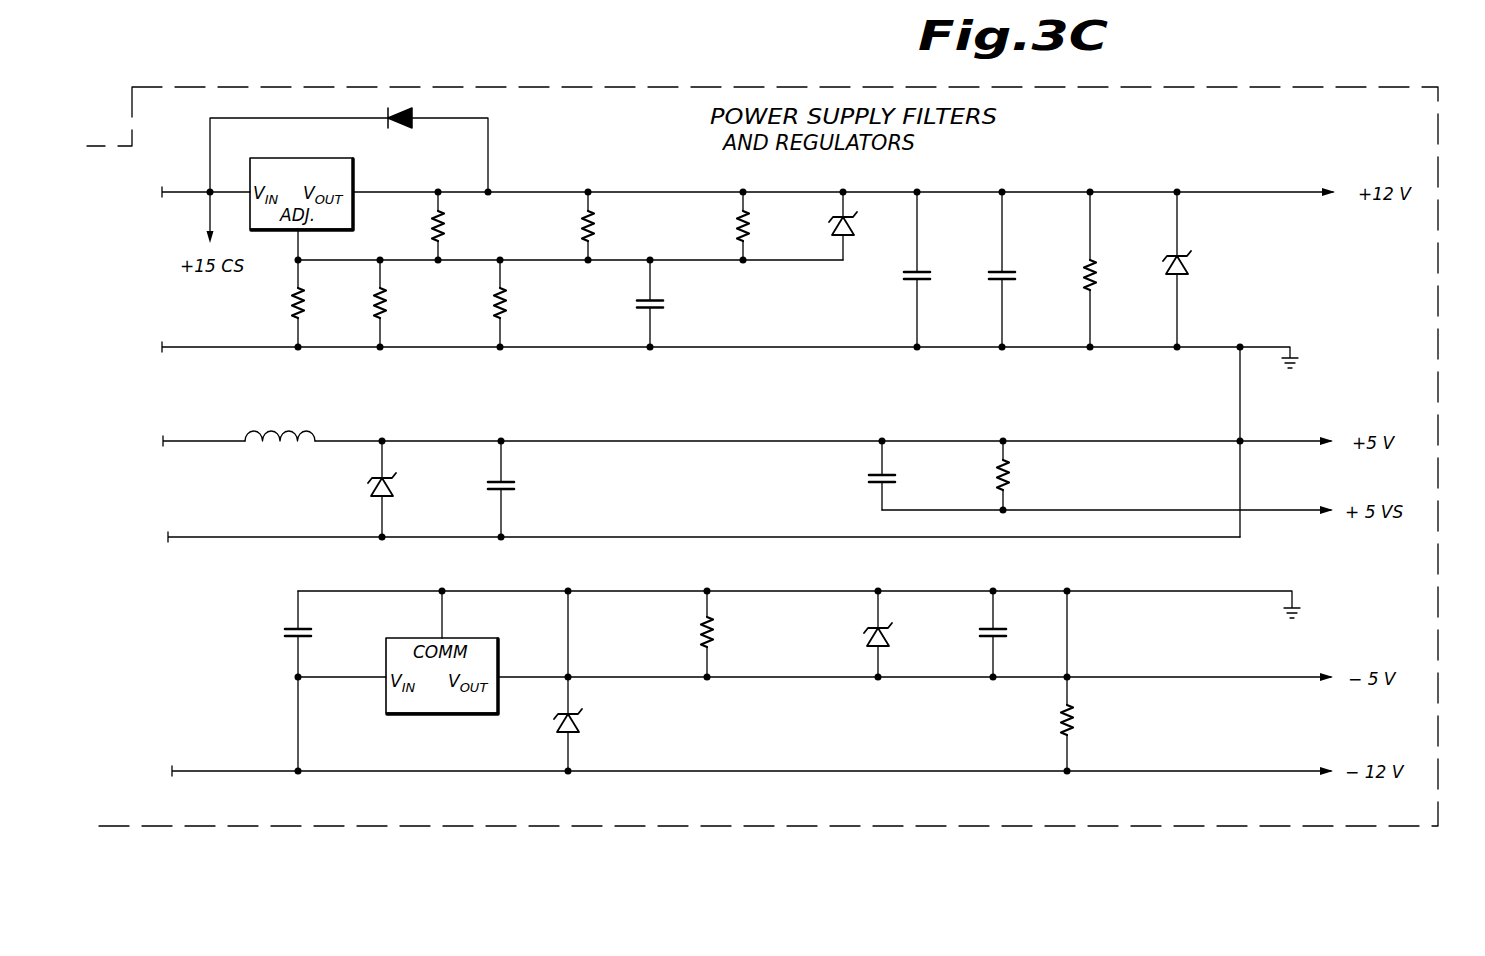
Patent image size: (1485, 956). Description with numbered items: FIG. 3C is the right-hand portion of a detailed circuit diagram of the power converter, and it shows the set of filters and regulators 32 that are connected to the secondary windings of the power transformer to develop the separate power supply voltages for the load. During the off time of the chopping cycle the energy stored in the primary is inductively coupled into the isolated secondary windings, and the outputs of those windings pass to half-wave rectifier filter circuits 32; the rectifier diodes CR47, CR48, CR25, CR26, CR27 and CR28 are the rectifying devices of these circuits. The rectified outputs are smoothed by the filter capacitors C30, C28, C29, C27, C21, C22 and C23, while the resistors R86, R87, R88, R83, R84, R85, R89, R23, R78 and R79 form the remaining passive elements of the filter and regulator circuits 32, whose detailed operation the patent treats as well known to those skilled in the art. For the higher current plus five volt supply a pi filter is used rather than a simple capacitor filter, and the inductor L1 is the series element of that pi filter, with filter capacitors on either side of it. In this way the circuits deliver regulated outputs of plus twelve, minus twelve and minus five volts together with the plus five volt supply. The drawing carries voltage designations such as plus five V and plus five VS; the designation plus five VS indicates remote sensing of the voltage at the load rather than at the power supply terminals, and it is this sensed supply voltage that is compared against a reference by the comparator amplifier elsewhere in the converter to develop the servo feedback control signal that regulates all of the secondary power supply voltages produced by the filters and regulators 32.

The filters and regulators 32 is at (728, 86).
The diode CR47 is at (430, 111).
The resistor R86 is at (460, 227).
The resistor R87 is at (610, 226).
The resistor R88 is at (766, 226).
The zener diode CR48 is at (861, 226).
The resistor R83 is at (265, 303).
The resistor R84 is at (407, 303).
The resistor R85 is at (528, 303).
The capacitor C30 is at (676, 303).
The capacitor C28 is at (936, 269).
The capacitor C29 is at (1021, 269).
The resistor R89 is at (1114, 269).
The zener diode CR25 is at (1202, 269).
The inductor L1 is at (279, 423).
The zener diode CR26 is at (409, 489).
The capacitor C27 is at (528, 489).
The capacitor C21 is at (900, 475).
The resistor R23 is at (1029, 475).
The capacitor C22 is at (315, 681).
The zener diode CR27 is at (597, 681).
The resistor R78 is at (730, 634).
The zener diode CR28 is at (901, 634).
The capacitor C23 is at (1011, 634).
The resistor R79 is at (1093, 681).